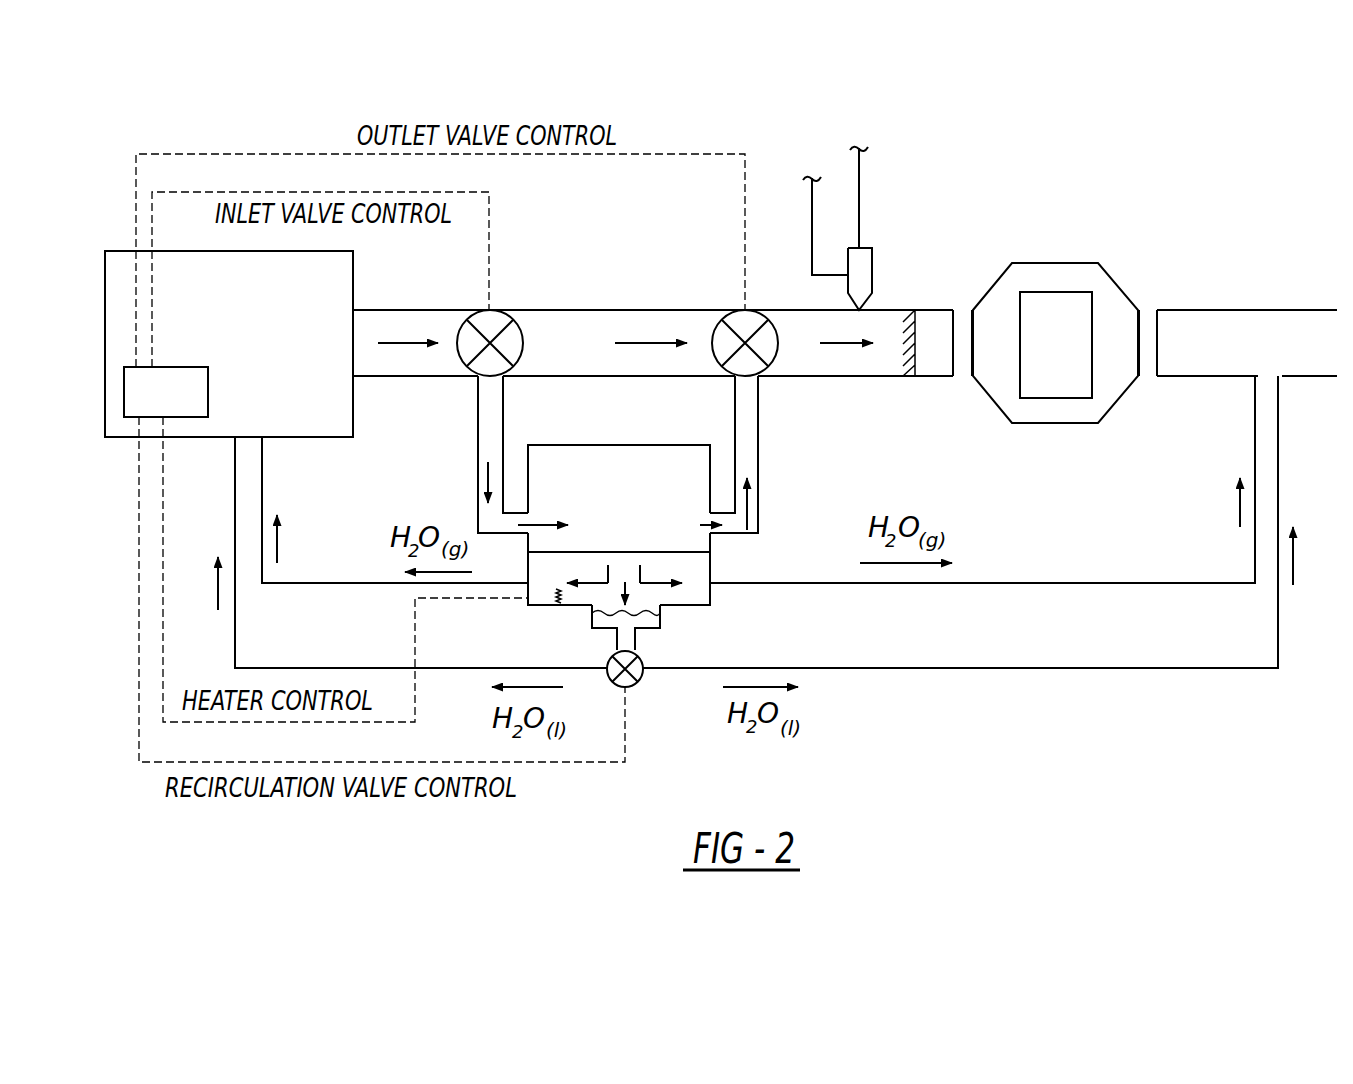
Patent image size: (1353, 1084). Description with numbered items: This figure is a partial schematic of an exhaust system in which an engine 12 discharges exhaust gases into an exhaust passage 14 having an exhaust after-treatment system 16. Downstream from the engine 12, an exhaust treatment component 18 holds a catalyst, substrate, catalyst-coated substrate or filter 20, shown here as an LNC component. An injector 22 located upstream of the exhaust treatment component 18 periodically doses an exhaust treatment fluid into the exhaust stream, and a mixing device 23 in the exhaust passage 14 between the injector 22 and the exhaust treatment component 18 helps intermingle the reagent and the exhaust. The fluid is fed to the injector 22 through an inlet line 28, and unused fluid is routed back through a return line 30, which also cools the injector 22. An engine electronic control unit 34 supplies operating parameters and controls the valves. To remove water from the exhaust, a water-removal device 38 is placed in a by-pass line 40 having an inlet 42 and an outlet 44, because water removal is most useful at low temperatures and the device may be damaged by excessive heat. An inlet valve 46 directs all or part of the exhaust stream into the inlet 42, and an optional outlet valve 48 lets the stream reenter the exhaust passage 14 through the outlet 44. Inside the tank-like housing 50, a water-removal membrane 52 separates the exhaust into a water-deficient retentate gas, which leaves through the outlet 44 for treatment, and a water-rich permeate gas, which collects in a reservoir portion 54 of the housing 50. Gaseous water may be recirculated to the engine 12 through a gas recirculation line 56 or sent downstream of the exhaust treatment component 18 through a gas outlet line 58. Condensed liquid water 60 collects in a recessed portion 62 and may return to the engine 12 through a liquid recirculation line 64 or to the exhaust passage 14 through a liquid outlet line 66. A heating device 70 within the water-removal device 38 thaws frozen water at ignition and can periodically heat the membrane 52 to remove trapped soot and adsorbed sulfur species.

The engine 12 is at (278, 353).
The exhaust passage 14 is at (438, 308).
The exhaust after-treatment system 16 is at (953, 760).
The exhaust treatment component 18 is at (1067, 423).
The substrate 20 is at (1070, 352).
The injector 22 is at (876, 275).
The mixing device 23 is at (918, 332).
The inlet line 28 is at (859, 192).
The return line 30 is at (812, 233).
The engine electronic control unit 34 is at (178, 404).
The water-removal device 38 is at (630, 440).
The by-pass line 40 is at (450, 477).
The inlet 42 is at (477, 405).
The outlet 44 is at (758, 448).
The inlet valve 46 is at (520, 337).
The outlet valve 48 is at (712, 333).
The housing 50 is at (537, 605).
The water-removal membrane 52 is at (615, 551).
The reservoir portion 54 is at (697, 606).
The gas recirculation line 56 is at (348, 584).
The gas outlet line 58 is at (903, 584).
The liquid water 60 is at (648, 620).
The recessed portion 62 is at (602, 627).
The liquid recirculation line 64 is at (433, 668).
The liquid outlet line 66 is at (1113, 668).
The heating device 70 is at (556, 596).